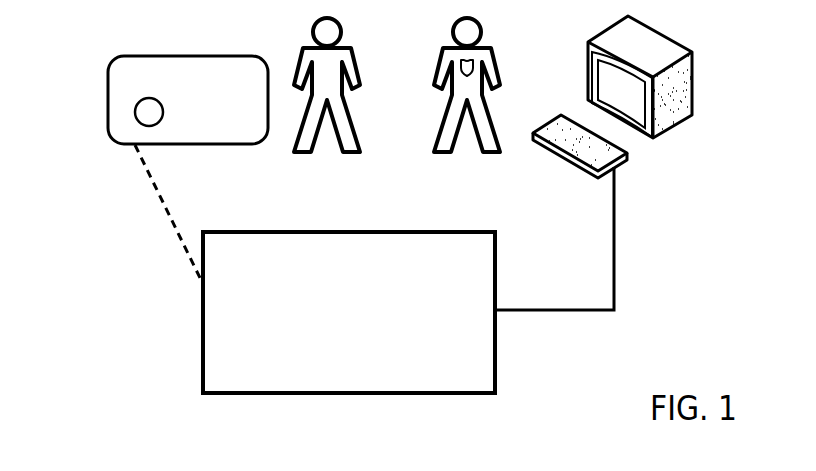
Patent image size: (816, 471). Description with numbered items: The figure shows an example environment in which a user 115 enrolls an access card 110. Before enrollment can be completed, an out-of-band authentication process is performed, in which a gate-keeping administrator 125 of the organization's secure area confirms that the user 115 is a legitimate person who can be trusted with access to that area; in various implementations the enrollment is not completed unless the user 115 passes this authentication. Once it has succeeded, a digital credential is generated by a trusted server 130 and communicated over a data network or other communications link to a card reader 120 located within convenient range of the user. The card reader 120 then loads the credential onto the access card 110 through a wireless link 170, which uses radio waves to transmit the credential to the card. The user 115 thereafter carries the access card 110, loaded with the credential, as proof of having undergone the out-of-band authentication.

The access card 110 is at (262, 123).
The user 115 is at (305, 51).
The card reader 120 is at (487, 380).
The gate-keeping administrator 125 is at (492, 50).
The trusted server 130 is at (672, 115).
The wireless link 170 is at (163, 207).